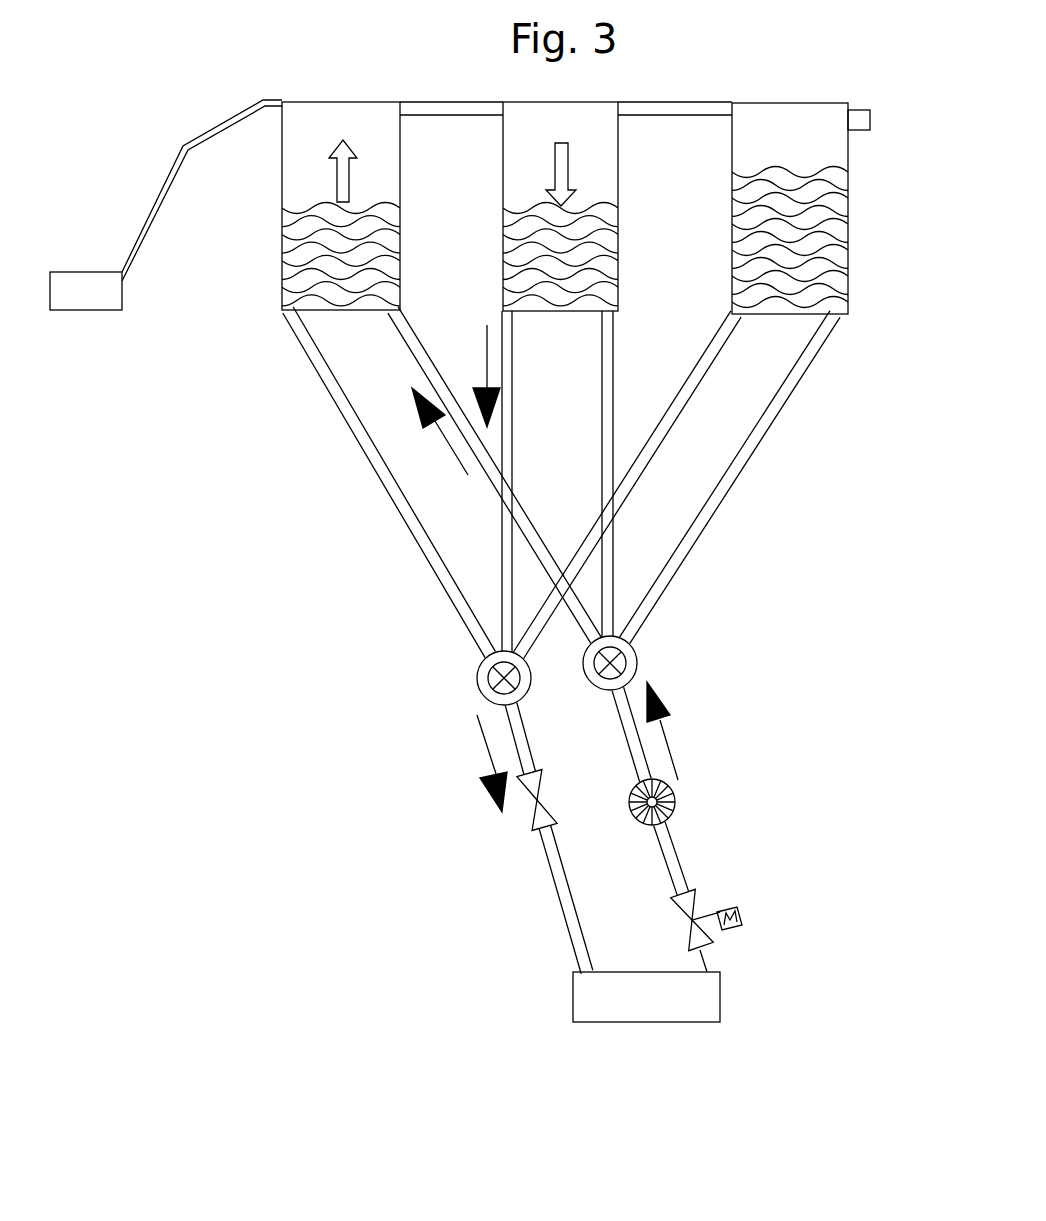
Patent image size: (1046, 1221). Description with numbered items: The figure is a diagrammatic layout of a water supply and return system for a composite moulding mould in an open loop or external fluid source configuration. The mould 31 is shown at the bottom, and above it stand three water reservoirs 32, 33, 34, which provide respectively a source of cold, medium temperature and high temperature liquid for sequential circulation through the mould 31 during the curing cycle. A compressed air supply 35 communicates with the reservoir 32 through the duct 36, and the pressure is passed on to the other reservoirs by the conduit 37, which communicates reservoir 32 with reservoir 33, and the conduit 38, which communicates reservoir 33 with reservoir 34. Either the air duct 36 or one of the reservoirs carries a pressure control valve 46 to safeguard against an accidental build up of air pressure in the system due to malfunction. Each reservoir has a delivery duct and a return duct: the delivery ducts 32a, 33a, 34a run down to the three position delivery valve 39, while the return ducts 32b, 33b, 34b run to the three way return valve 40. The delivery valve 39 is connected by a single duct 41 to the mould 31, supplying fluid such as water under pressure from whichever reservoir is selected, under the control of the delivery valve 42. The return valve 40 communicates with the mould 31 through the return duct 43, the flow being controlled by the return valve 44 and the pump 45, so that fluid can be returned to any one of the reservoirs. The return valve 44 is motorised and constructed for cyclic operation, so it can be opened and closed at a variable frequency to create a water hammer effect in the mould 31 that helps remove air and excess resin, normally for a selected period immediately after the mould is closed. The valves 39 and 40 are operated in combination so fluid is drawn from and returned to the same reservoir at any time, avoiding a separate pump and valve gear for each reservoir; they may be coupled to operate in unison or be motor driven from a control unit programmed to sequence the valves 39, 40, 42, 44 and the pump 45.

The mould 31 is at (579, 986).
The water reservoir 32 is at (280, 244).
The delivery duct 32a is at (317, 378).
The return duct 32b is at (424, 376).
The water reservoir 33 is at (501, 244).
The delivery duct 33a is at (470, 481).
The return duct 33b is at (570, 474).
The water reservoir 34 is at (730, 244).
The delivery duct 34a is at (628, 485).
The return duct 34b is at (730, 477).
The compressed air supply 35 is at (133, 317).
The air duct 36 is at (157, 177).
The conduit 37 is at (452, 130).
The conduit 38 is at (676, 129).
The three position delivery valve 39 is at (469, 682).
The three way return valve 40 is at (635, 664).
The single duct 41 is at (527, 838).
The delivery valve 42 is at (488, 791).
The return duct 43 is at (709, 791).
The motorised return valve 44 is at (734, 911).
The pump 45 is at (704, 753).
The pressure control valve 46 is at (893, 150).